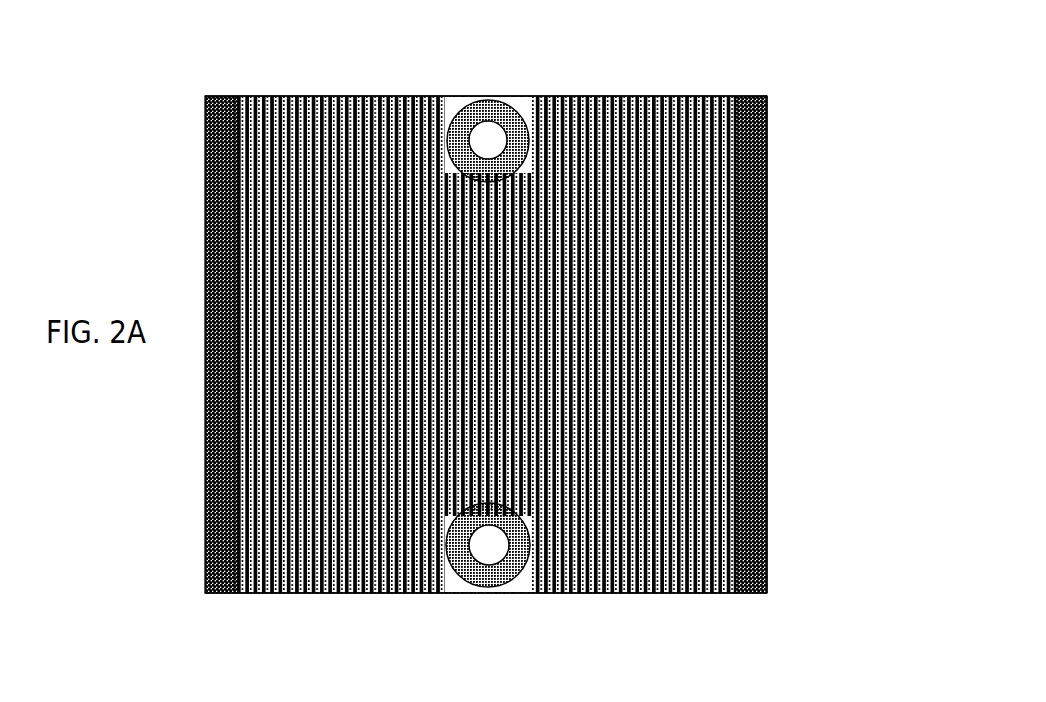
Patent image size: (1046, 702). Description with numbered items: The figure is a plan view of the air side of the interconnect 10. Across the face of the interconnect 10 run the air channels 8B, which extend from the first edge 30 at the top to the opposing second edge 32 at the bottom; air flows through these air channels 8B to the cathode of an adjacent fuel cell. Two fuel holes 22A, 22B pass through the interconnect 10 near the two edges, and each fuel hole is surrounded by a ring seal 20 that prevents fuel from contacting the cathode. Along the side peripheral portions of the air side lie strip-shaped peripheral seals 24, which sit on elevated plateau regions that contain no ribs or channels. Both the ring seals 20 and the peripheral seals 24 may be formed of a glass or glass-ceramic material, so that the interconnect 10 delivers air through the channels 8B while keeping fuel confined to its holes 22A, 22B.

The interconnect 10 is at (170, 141).
The air channels 8B is at (648, 428).
The strip-shaped peripheral seals 24 is at (759, 323).
The first edge 30 is at (633, 88).
The second edge 32 is at (625, 585).
The fuel hole 22A is at (483, 113).
The fuel hole 22B is at (477, 557).
The ring seals 20 is at (450, 563).